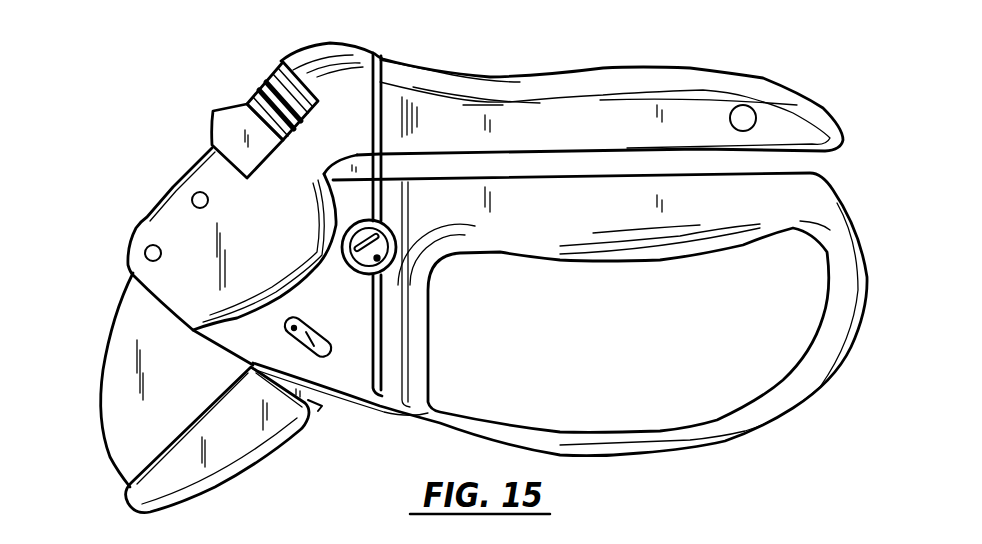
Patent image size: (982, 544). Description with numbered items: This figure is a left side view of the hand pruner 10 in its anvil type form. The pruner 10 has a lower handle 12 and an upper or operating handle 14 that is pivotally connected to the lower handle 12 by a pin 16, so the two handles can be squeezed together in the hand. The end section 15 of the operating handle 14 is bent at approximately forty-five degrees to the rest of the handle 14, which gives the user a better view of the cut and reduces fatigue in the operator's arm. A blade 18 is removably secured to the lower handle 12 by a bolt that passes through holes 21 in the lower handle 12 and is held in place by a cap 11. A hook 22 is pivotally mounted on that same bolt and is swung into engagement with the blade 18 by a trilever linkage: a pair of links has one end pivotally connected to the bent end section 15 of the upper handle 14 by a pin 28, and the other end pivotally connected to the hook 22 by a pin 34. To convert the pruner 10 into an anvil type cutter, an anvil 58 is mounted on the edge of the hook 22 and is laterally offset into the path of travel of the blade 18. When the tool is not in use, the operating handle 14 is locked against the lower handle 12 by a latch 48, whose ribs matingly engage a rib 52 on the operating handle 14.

The hand pruner 10 is at (487, 49).
The cap 11 is at (387, 251).
The lower handle 12 is at (803, 401).
The upper or operating handle 14 is at (678, 67).
The end section of the handle 15 is at (207, 147).
The pin 16 is at (193, 197).
The blade 18 is at (101, 358).
The holes 21 is at (378, 258).
The hook 22 is at (316, 400).
The pin 28 is at (145, 253).
The pin 34 is at (300, 324).
The latch 48 is at (217, 107).
The rib 52 is at (279, 70).
The anvil 58 is at (270, 458).